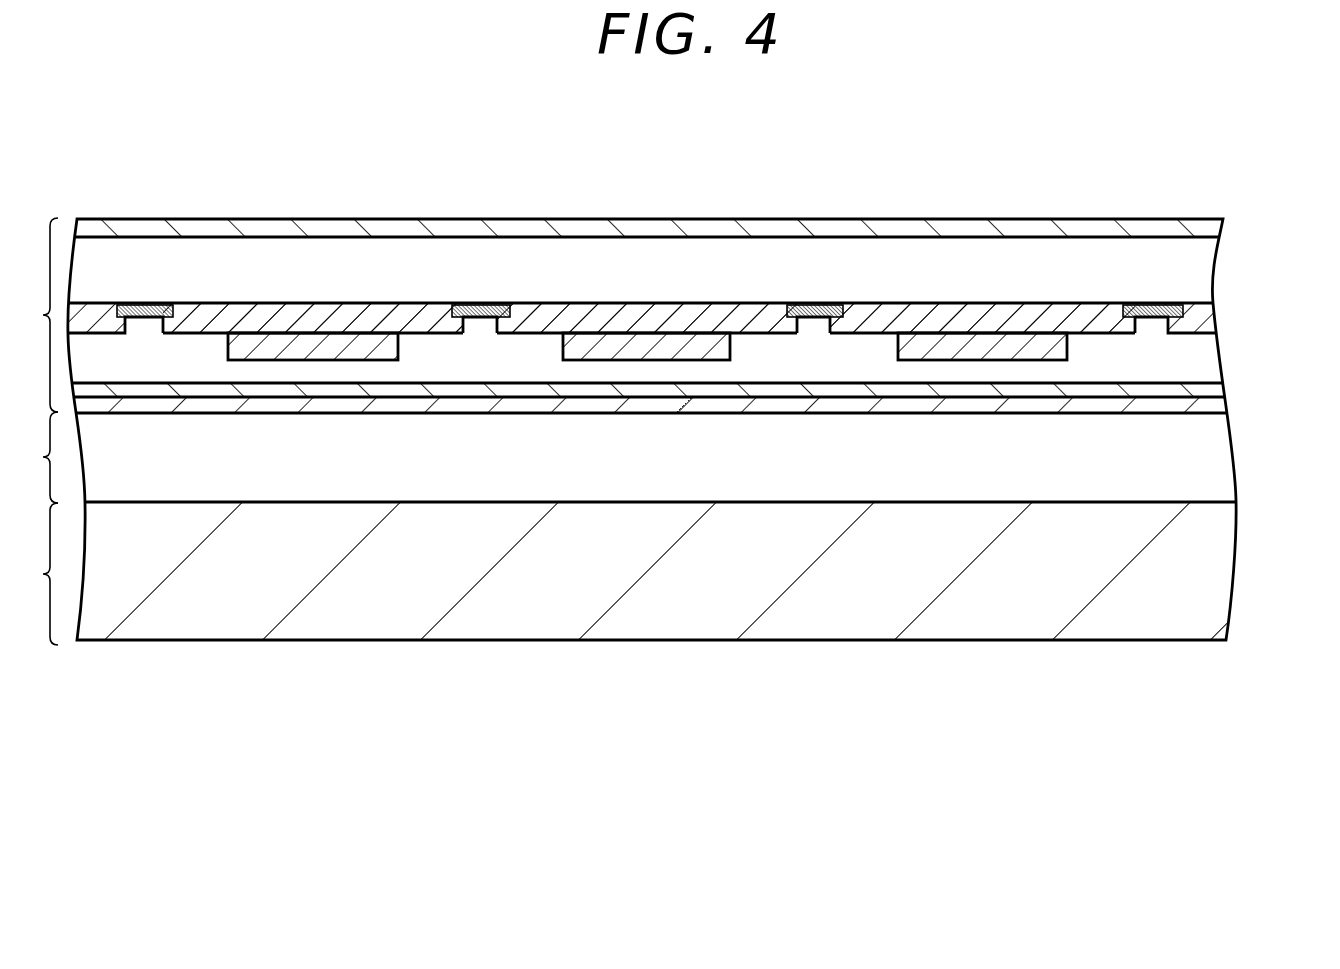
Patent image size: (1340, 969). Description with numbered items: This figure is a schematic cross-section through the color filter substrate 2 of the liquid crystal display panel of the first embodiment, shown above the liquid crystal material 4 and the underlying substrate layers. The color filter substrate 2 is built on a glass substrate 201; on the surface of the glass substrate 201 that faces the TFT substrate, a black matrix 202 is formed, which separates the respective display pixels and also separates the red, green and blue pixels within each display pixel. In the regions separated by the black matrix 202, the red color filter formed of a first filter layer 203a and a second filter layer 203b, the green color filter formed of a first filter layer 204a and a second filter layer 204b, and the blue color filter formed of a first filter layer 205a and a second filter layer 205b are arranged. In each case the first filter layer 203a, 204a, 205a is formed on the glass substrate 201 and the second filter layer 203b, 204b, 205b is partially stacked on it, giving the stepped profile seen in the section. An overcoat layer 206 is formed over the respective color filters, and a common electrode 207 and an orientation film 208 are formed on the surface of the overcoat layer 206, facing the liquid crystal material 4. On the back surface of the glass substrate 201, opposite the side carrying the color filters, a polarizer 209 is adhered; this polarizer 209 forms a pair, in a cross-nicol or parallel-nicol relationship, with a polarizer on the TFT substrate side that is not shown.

The second substrate 2 is at (40, 315).
The liquid crystal material 4 is at (40, 457).
The glass substrate 201 is at (1207, 273).
The black matrix 202 is at (141, 305).
The first filter layer of red color filter 203a is at (327, 318).
The second filter layer of red color filter 203b is at (300, 347).
The first filter layer of green color filter 204a is at (667, 313).
The second filter layer of green color filter 204b is at (612, 343).
The first filter layer of blue color filter 205a is at (1015, 313).
The second filter layer of blue color filter 205b is at (965, 345).
The overcoat layer 206 is at (1180, 358).
The common electrode 207 is at (1200, 388).
The orientation film 208 is at (1202, 403).
The polarizer 209 is at (107, 222).